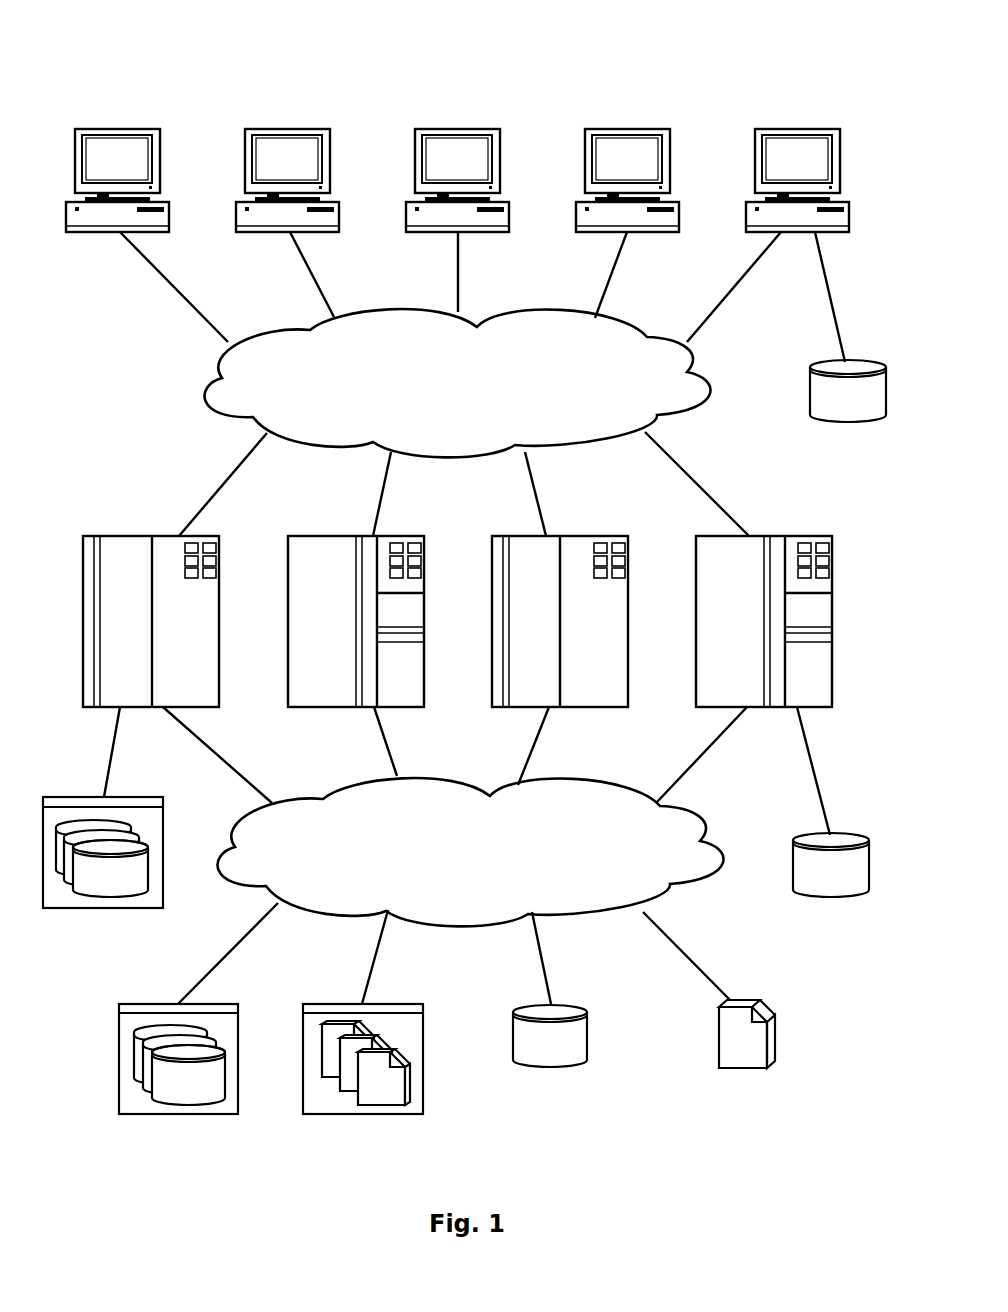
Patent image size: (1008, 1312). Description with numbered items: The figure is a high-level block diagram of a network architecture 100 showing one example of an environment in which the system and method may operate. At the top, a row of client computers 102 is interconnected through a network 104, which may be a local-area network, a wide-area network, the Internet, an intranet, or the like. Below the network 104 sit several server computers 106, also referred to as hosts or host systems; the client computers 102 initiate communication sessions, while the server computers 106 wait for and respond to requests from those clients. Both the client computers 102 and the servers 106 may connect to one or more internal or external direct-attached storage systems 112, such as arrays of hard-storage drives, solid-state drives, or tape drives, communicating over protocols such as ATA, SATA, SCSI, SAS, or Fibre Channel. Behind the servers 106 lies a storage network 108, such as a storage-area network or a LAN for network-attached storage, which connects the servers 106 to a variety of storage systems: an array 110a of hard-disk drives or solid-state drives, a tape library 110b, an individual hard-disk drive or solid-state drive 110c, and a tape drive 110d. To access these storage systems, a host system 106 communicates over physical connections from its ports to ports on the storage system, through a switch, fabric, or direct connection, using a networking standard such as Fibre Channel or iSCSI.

The network architecture 100 is at (190, 58).
The client computers 102 is at (133, 169).
The network 104 is at (440, 406).
The server computers 106 is at (111, 629).
The storage network 108 is at (491, 878).
The arrays of hard-disk drives or solid-state drives 110a is at (178, 1116).
The tape library 110b is at (362, 1116).
The individual hard-disk drive or solid-state drive 110c is at (550, 1064).
The tape drive 110d is at (742, 1070).
The direct-attached storage system 112 is at (848, 420).